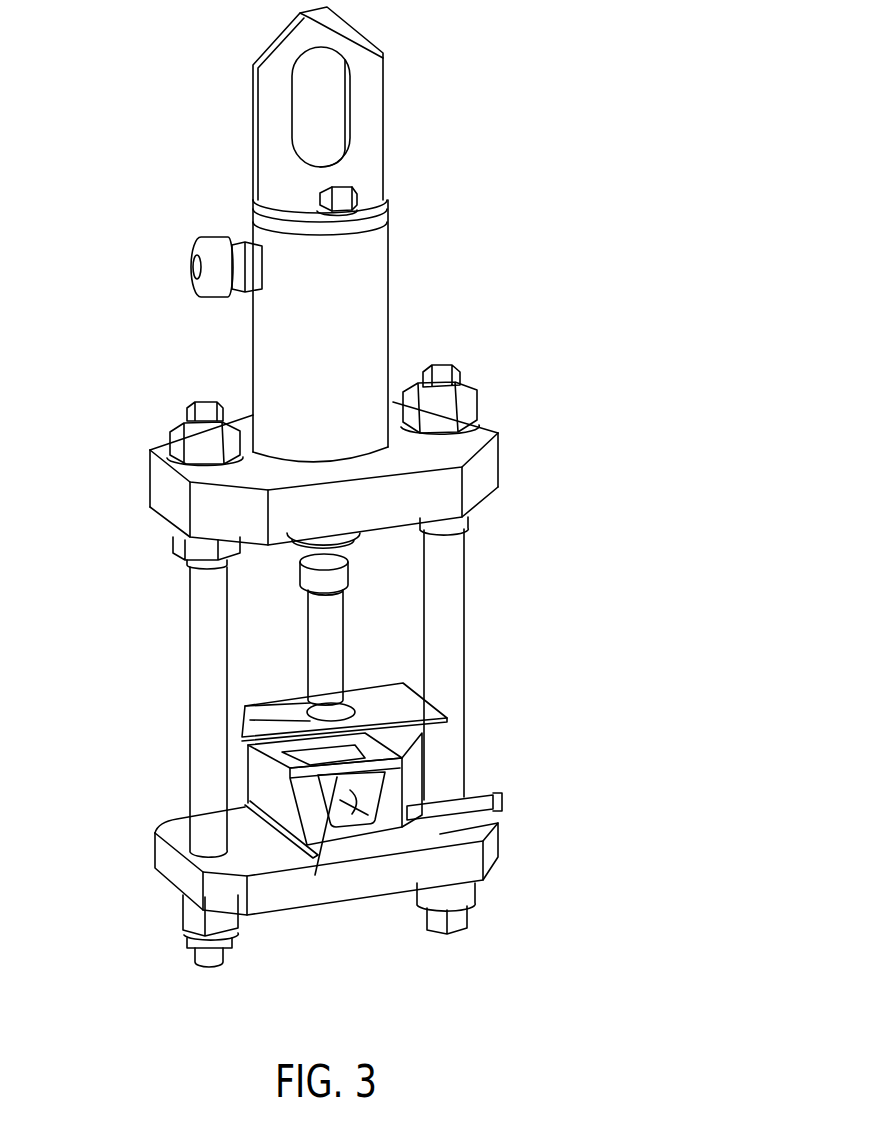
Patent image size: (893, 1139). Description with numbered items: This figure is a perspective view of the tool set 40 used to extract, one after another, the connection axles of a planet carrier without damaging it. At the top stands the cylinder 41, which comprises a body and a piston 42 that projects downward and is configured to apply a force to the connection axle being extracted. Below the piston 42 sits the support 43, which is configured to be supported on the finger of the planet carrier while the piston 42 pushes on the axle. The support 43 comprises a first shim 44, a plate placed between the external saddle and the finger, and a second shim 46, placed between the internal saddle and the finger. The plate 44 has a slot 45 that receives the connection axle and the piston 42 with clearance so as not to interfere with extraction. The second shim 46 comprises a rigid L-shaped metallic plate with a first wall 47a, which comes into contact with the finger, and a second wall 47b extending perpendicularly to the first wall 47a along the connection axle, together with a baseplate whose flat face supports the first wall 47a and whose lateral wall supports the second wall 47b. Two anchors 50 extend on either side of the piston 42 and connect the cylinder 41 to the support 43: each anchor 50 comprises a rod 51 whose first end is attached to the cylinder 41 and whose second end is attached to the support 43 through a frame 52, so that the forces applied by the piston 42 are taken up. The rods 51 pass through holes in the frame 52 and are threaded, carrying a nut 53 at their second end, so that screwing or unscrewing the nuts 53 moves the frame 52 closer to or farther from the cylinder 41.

The tool set 40 is at (522, 132).
The cylinder 41 is at (340, 302).
The piston 42 is at (308, 615).
The support 43 is at (507, 673).
The first shim 44 is at (395, 698).
The slot 45 is at (298, 716).
The second shim 46 is at (265, 794).
The first wall 47a is at (325, 825).
The second wall 47b is at (398, 815).
The anchor 50 is at (150, 624).
The rod 51 is at (205, 698).
The frame 52 is at (385, 880).
The nut 53 is at (193, 943).